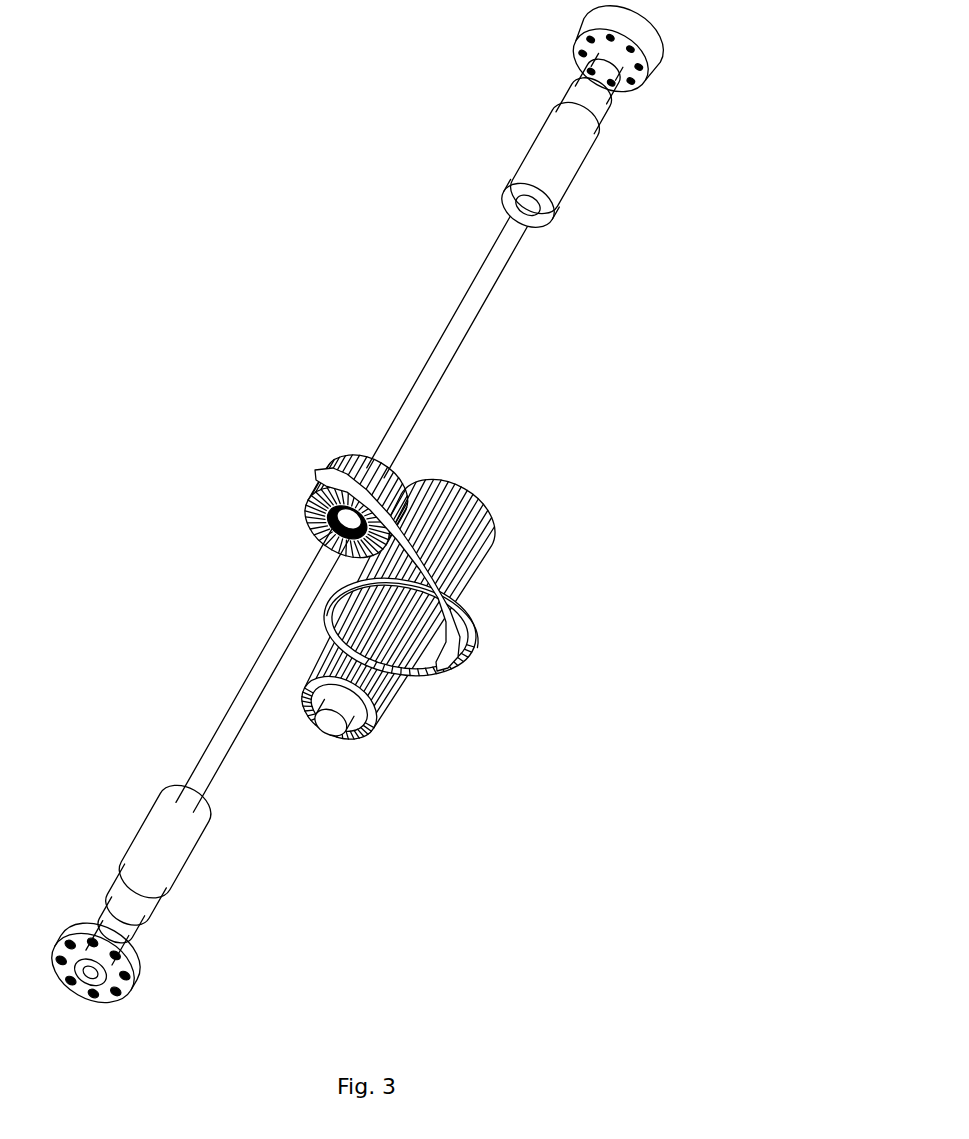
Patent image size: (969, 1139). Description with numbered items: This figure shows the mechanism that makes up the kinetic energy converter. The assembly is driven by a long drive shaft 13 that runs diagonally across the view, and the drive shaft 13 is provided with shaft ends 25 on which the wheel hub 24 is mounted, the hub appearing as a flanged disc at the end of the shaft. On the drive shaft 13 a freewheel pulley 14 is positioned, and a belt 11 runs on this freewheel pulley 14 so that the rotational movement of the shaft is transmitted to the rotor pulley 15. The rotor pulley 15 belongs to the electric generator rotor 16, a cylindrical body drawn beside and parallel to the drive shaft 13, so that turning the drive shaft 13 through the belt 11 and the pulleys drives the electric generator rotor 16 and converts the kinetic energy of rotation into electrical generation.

The belt 11 is at (455, 602).
The drive shaft 13 is at (232, 720).
The freewheel pulley 14 is at (300, 498).
The rotor pulley 15 is at (450, 673).
The electric generator rotor 16 is at (400, 715).
The wheel hub 24 is at (130, 960).
The shaft ends 25 is at (172, 832).